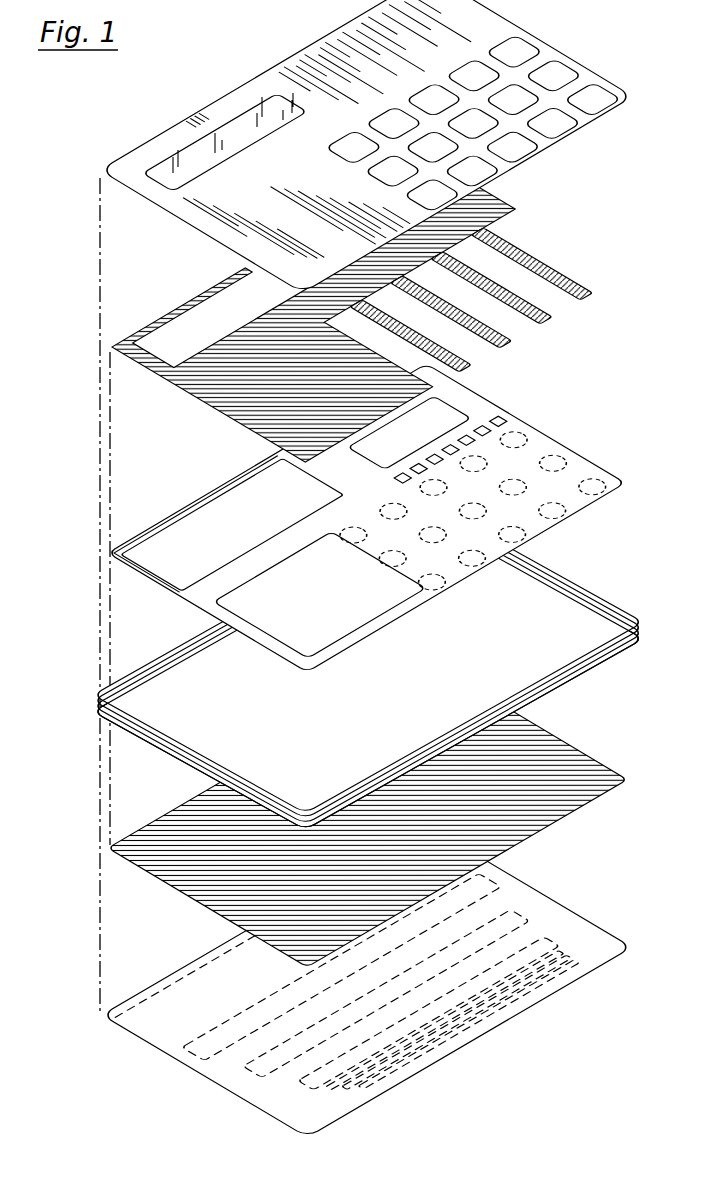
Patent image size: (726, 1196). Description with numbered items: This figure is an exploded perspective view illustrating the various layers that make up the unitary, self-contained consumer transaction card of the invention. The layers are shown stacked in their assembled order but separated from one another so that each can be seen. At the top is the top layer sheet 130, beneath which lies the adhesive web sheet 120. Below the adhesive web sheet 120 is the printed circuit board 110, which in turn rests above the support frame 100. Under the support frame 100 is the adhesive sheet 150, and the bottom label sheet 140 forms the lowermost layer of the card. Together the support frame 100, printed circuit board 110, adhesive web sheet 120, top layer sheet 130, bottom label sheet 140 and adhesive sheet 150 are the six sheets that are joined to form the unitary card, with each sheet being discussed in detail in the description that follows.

The top layer sheet 130 is at (563, 42).
The adhesive web sheet 120 is at (548, 248).
The printed circuit board 110 is at (553, 430).
The support frame 100 is at (567, 573).
The adhesive sheet 150 is at (570, 742).
The bottom label sheet 140 is at (565, 900).